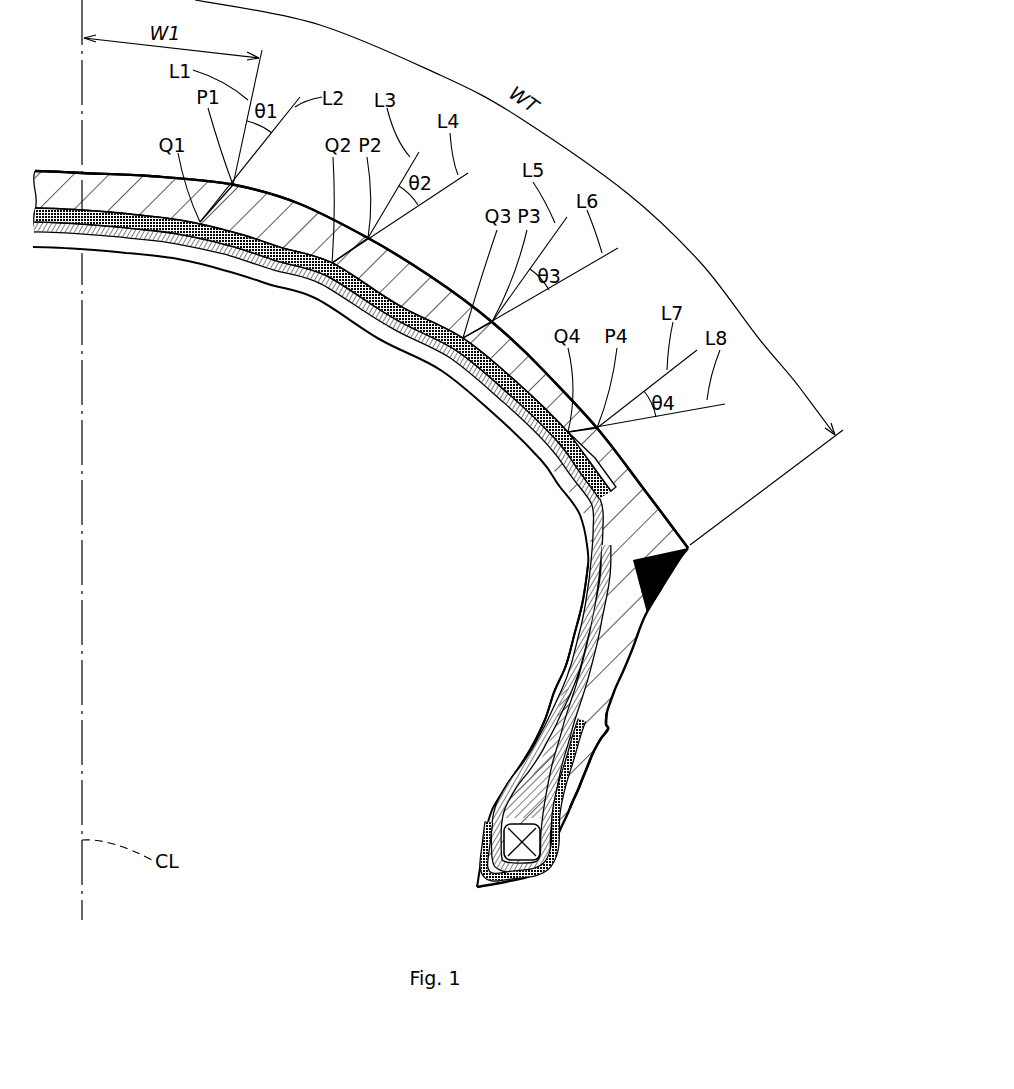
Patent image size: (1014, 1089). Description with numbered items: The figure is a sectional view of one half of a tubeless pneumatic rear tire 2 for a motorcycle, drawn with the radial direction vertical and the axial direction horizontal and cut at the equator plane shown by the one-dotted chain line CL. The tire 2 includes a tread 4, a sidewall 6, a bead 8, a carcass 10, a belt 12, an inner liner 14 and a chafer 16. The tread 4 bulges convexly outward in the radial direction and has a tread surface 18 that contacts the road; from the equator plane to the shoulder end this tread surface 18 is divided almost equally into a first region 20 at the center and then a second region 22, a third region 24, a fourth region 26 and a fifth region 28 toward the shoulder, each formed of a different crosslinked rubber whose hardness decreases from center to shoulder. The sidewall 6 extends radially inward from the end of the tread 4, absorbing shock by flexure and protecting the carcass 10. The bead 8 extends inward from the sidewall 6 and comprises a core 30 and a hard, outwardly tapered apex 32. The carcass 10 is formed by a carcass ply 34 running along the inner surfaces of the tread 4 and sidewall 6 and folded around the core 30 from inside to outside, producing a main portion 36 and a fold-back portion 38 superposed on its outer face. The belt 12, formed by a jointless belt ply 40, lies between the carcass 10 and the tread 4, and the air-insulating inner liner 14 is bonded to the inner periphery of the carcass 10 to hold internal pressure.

The tire 2 is at (677, 61).
The tread 4 is at (444, 273).
The sidewall 6 is at (652, 641).
The bead 8 is at (593, 774).
The carcass 10 is at (320, 547).
The belt 12 is at (369, 355).
The inner liner 14 is at (322, 293).
The chafer 16 is at (480, 864).
The tread surface 18 is at (220, 243).
The first region 20 is at (107, 185).
The second region 22 is at (273, 213).
The third region 24 is at (405, 278).
The fourth region 26 is at (518, 363).
The fifth region 28 is at (633, 502).
The core 30 is at (530, 840).
The apex 32 is at (532, 787).
The carcass ply 34 is at (415, 337).
The main portion 36 is at (538, 725).
The fold-back portion 38 is at (587, 708).
The belt ply 40 is at (591, 448).